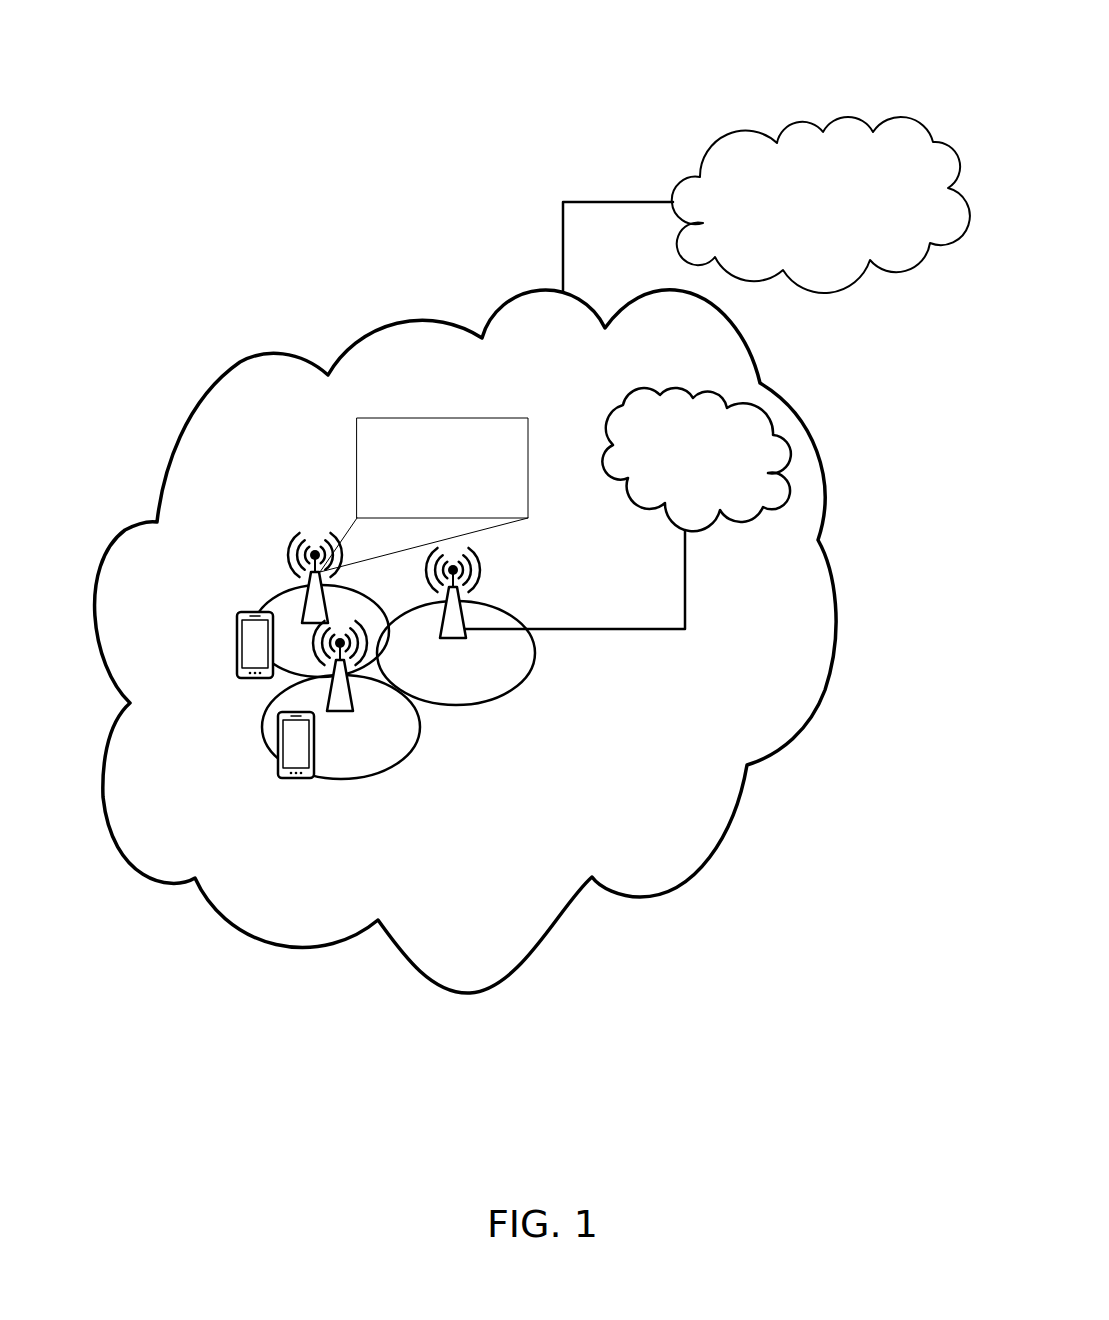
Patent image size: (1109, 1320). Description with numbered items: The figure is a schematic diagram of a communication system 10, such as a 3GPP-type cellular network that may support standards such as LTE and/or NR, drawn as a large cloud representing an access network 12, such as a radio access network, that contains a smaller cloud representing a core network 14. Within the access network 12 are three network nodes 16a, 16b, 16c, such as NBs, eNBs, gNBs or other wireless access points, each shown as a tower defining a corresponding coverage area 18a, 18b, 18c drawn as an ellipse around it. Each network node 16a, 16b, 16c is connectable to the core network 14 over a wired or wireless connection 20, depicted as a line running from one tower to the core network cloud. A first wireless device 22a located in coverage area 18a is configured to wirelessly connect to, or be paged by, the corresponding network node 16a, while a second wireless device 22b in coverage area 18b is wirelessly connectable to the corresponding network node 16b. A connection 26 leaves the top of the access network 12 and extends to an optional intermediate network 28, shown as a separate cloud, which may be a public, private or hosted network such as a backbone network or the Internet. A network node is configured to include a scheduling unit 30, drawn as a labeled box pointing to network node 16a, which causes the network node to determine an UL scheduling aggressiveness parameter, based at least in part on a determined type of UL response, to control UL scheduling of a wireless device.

The communication system 10 is at (266, 33).
The access network 12 is at (545, 330).
The core network 14 is at (753, 465).
The network node 16a is at (290, 560).
The network node 16b is at (418, 725).
The network node 16c is at (470, 572).
The coverage area 18a is at (263, 600).
The coverage area 18b is at (352, 706).
The coverage area 18c is at (533, 651).
The connection 20 is at (687, 582).
The first wireless device 22a is at (237, 672).
The second wireless device 22b is at (278, 766).
The connection 26 is at (580, 203).
The intermediate network 28 is at (852, 209).
The scheduling unit 30 is at (455, 515).